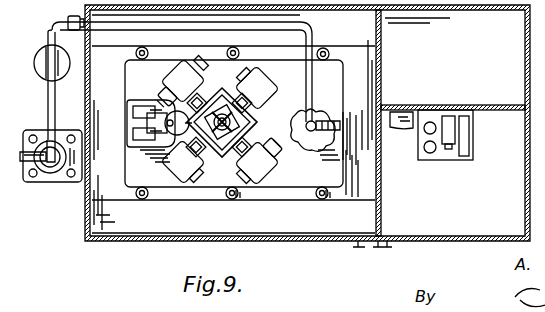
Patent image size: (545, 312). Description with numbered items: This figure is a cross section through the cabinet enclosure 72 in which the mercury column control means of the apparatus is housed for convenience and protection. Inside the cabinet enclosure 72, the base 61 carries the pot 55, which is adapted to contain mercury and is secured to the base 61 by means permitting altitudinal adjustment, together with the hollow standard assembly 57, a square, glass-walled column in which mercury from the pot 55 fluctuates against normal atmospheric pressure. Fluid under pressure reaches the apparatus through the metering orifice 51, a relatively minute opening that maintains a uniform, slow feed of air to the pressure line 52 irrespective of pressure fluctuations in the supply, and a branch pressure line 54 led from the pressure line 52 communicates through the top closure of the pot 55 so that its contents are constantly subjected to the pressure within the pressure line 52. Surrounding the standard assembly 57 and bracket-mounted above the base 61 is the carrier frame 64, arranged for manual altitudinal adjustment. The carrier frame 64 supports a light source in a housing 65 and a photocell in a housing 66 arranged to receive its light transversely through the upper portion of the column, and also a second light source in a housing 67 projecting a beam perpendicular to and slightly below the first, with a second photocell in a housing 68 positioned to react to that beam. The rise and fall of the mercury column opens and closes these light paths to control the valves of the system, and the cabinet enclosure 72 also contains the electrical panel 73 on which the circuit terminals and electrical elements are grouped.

The metering orifice 51 is at (58, 178).
The pressure line 52 is at (28, 166).
The branch pressure line 54 is at (155, 28).
The pot 55 is at (318, 114).
The hollow standard assembly 57 is at (248, 122).
The base 61 is at (322, 147).
The carrier frame 64 is at (210, 88).
The housing 65 is at (247, 170).
The housing 66 is at (175, 93).
The housing 67 is at (176, 172).
The housing 68 is at (262, 81).
The cabinet enclosure 72 is at (114, 240).
The electrical panel 73 is at (448, 135).